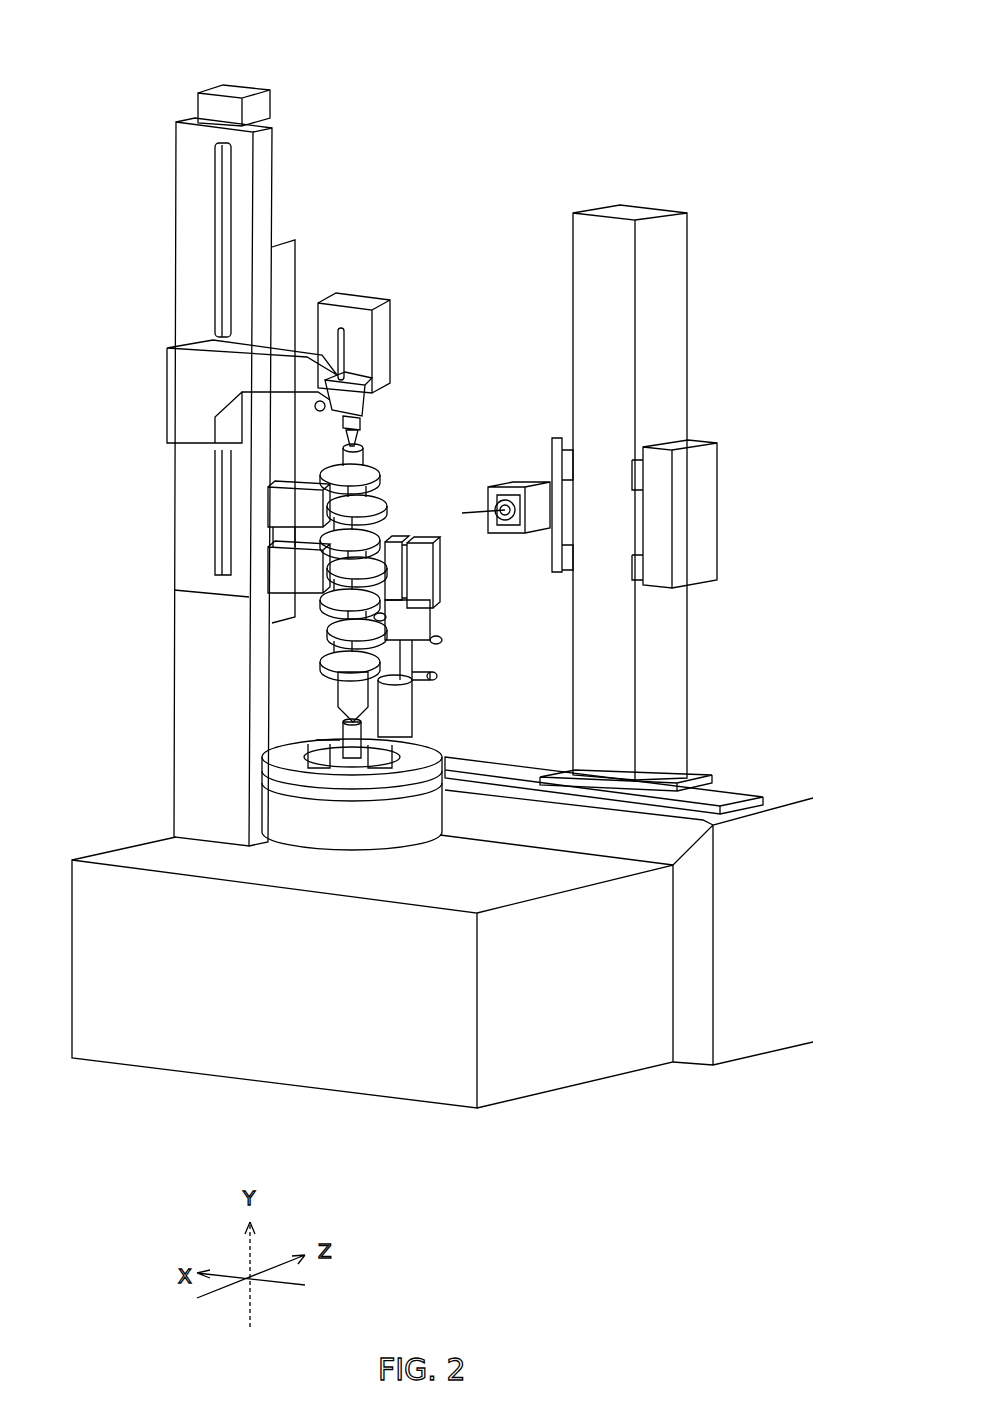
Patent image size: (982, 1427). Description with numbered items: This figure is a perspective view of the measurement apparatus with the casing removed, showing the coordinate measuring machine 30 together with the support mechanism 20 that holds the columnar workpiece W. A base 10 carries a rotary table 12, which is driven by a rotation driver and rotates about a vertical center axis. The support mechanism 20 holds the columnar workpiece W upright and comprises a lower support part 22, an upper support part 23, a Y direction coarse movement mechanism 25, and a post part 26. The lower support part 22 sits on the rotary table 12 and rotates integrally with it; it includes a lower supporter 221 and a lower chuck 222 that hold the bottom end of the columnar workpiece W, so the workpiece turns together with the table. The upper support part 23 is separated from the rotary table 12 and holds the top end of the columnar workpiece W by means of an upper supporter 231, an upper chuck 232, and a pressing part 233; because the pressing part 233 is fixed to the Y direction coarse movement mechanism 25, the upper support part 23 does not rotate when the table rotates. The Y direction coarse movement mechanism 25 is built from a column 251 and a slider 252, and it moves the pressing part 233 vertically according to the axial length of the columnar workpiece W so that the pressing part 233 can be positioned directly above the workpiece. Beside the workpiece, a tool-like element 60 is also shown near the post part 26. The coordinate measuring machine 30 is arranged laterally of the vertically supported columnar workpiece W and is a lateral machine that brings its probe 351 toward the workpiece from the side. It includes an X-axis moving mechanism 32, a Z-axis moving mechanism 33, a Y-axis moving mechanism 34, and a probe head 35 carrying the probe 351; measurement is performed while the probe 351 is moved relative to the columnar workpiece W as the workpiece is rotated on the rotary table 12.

The base 10 is at (340, 1080).
The rotary table 12 is at (346, 785).
The support mechanism 20 is at (271, 465).
The lower support part 22 is at (379, 715).
The lower supporter 221 is at (368, 708).
The lower chuck 222 is at (362, 742).
The upper support part 23 is at (364, 443).
The upper supporter 231 is at (360, 436).
The upper chuck 232 is at (362, 408).
The pressing part 233 is at (385, 346).
The Y direction coarse movement mechanism 25 is at (201, 465).
The column 251 is at (190, 242).
The slider 252 is at (178, 418).
The post part 26 is at (412, 690).
The coordinate measuring machine 30 is at (604, 460).
The X-axis moving mechanism 32 is at (722, 797).
The Z-axis moving mechanism 33 is at (556, 452).
The Y-axis moving mechanism 34 is at (552, 548).
The probe head 35 is at (508, 486).
The probe 351 is at (466, 512).
The tool 60 is at (425, 627).
The columnar workpiece W is at (375, 507).